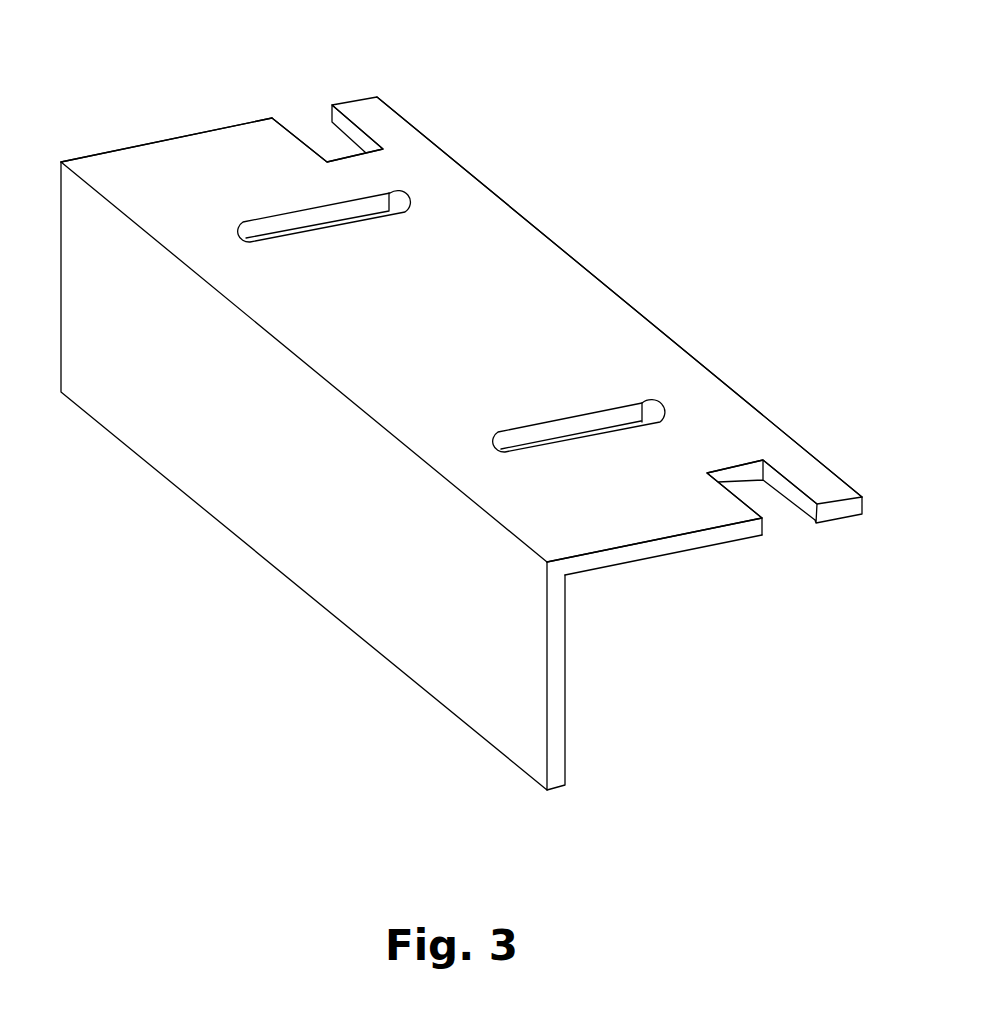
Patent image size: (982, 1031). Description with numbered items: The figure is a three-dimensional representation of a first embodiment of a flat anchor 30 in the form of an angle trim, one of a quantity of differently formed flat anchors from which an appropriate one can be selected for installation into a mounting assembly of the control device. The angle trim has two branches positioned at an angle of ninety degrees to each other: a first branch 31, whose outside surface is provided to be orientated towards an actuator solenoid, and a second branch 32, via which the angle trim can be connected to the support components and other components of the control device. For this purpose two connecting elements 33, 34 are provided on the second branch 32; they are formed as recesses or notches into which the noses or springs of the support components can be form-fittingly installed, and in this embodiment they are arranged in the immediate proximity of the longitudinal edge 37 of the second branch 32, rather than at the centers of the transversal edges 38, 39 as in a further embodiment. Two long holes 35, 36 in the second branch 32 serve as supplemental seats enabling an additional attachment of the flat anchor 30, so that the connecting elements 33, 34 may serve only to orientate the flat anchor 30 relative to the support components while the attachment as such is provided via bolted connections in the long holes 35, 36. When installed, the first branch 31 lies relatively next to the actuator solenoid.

The flat anchor 30 is at (461, 403).
The first branch 31 is at (268, 542).
The second branch 32 is at (535, 252).
The connecting element 33 is at (307, 120).
The connecting element 34 is at (785, 518).
The long hole 35 is at (318, 221).
The long hole 36 is at (538, 432).
The longitudinal edge 37 is at (652, 320).
The transversal edge 38 is at (215, 128).
The transversal edge 39 is at (637, 562).